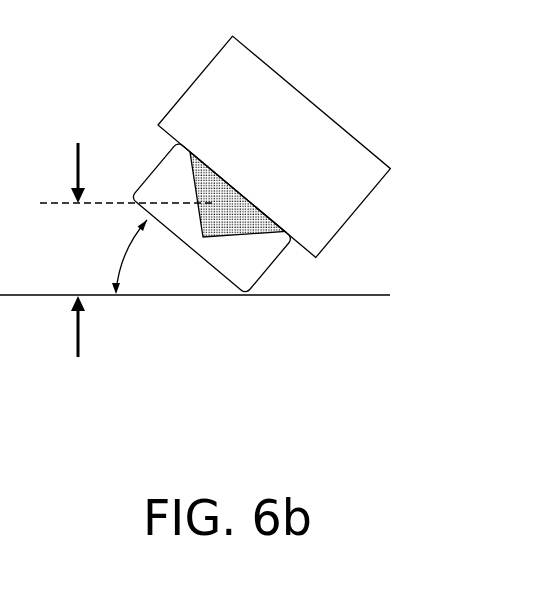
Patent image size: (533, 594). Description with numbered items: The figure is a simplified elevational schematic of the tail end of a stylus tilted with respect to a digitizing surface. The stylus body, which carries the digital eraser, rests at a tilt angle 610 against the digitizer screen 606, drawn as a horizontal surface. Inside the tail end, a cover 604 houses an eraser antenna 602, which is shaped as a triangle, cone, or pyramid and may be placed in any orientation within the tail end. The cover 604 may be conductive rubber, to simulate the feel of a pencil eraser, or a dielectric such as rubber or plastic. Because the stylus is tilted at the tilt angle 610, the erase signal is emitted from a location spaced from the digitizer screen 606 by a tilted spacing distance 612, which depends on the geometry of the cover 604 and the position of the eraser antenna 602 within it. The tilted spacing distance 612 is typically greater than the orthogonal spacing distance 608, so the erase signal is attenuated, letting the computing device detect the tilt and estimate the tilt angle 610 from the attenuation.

The eraser antenna 602 is at (212, 220).
The cover 604 is at (166, 155).
The digitizer screen 606 is at (279, 66).
The distance d5 608 is at (0, 271).
The angle θ 610 is at (145, 272).
The distance d6 612 is at (66, 236).